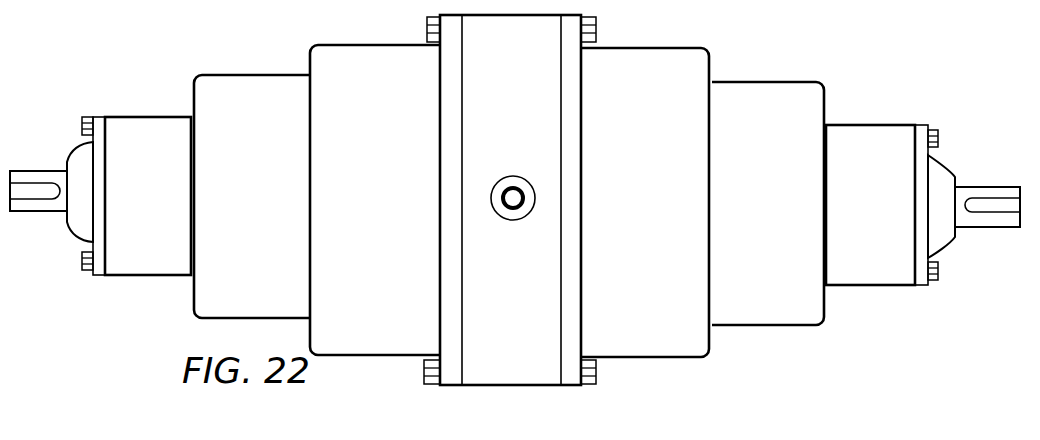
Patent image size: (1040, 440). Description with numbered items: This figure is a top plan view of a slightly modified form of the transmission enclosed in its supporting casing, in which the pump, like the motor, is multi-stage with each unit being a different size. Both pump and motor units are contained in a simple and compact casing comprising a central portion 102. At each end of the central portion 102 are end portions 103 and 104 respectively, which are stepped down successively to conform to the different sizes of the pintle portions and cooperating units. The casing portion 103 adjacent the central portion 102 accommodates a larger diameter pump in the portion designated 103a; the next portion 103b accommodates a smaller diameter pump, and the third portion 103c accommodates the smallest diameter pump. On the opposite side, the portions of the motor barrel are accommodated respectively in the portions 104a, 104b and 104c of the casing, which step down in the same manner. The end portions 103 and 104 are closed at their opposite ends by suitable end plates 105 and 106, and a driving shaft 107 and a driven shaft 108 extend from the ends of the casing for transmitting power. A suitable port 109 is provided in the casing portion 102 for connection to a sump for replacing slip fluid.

The central portion 102 is at (557, 93).
The end portion 103 is at (272, 184).
The casing portion 103a is at (375, 200).
The casing portion 103b is at (252, 196).
The casing portion 103c is at (148, 196).
The end portion 104 is at (748, 193).
The casing portion 104a is at (645, 202).
The casing portion 104b is at (768, 203).
The casing portion 104c is at (870, 205).
The end plate 105 is at (100, 116).
The end plate 106 is at (926, 128).
The driving shaft 107 is at (50, 211).
The driven shaft 108 is at (1002, 217).
The port 109 is at (510, 205).